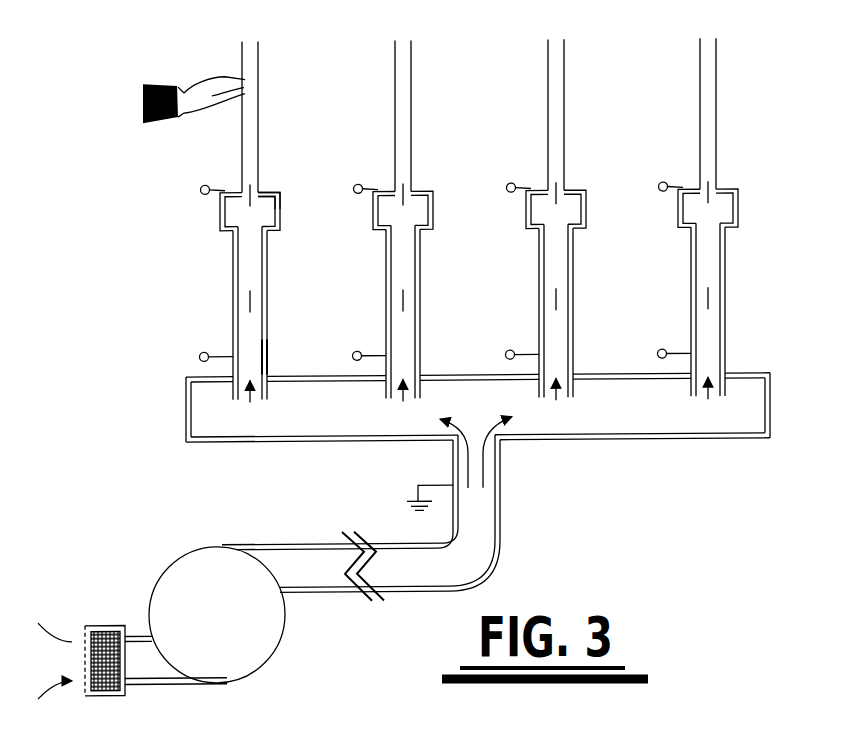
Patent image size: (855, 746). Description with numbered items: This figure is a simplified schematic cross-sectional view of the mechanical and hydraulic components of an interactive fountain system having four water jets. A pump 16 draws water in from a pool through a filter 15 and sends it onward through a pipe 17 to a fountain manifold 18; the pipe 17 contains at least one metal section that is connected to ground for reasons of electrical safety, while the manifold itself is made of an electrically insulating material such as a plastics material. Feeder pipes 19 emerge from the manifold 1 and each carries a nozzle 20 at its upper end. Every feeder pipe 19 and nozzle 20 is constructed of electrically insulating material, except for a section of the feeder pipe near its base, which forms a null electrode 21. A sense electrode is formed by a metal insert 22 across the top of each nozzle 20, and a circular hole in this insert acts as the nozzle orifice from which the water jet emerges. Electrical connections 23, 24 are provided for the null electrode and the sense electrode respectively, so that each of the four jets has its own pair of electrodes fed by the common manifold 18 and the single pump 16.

The manifold 1 is at (239, 156).
The filter 15 is at (100, 625).
The pump 16 is at (192, 568).
The pipe 17 is at (503, 492).
The fountain manifold 18 is at (302, 443).
The feeder pipe 19 is at (232, 297).
The nozzle 20 is at (220, 236).
The null electrode 21 is at (264, 352).
The metal insert 22 is at (276, 193).
The electrical connection 23 is at (200, 354).
The electrical connection 24 is at (203, 195).